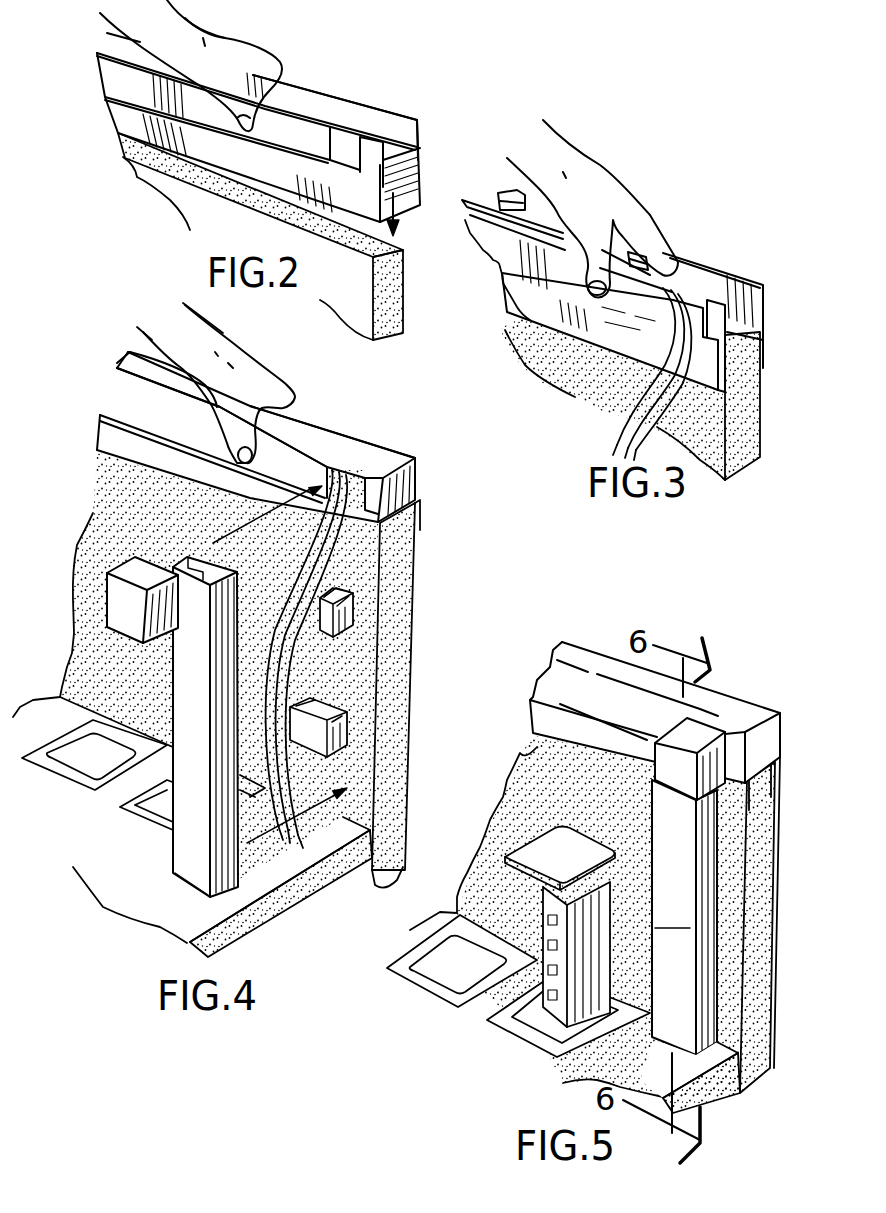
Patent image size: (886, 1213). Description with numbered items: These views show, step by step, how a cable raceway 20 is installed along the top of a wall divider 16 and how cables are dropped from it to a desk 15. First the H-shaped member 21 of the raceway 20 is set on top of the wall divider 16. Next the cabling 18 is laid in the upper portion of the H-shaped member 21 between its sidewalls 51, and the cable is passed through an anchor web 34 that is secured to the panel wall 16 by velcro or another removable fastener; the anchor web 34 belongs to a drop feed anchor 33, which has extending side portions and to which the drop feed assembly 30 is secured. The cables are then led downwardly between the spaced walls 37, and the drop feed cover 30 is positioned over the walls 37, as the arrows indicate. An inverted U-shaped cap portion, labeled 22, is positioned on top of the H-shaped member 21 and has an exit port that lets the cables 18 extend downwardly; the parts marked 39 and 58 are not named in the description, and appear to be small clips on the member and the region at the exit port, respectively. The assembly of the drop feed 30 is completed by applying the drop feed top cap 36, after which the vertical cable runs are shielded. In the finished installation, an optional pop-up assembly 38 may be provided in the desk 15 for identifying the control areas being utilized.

In FIG. 4, the desk 15 is at (277, 862).
In FIG. 2, the wall divider 16 is at (403, 267).
In FIG. 3, the wall divider 16 is at (760, 430).
In FIG. 4, the wall divider 16 is at (415, 605).
In FIG. 5, the wall divider 16 is at (775, 883).
In FIG. 3, the cabling 18 is at (707, 277).
In FIG. 4, the cabling 18 is at (303, 780).
In FIG. 2, the raceway 20 is at (307, 88).
In FIG. 4, the raceway 20 is at (437, 447).
In FIG. 5, the raceway 20 is at (735, 691).
In FIG. 2, the H-shaped member 21 is at (418, 123).
In FIG. 3, the H-shaped member 21 is at (700, 257).
In FIG. 4, the channel cover 22 is at (374, 434).
In FIG. 4, the drop feed assembly 30 is at (177, 862).
In FIG. 5, the drop feed assembly 30 is at (684, 917).
In FIG. 4, the drop feed anchors 33 is at (352, 628).
In FIG. 4, the anchor web 34 is at (347, 592).
In FIG. 4, the drop feed top cap 36 is at (108, 568).
In FIG. 5, the drop feed top cap 36 is at (667, 728).
In FIG. 4, the spaced walls 37 is at (92, 548).
In FIG. 5, the spaced walls 37 is at (700, 1027).
In FIG. 4, the pop-up assembly 38 is at (97, 793).
In FIG. 5, the pop-up assembly 38 is at (514, 1053).
In FIG. 3, the retaining clip 39 is at (473, 203).
In FIG. 2, the sidewalls 51 is at (357, 113).
In FIG. 3, the sidewalls 51 is at (760, 307).
In FIG. 4, the top cover plate 58 is at (283, 457).